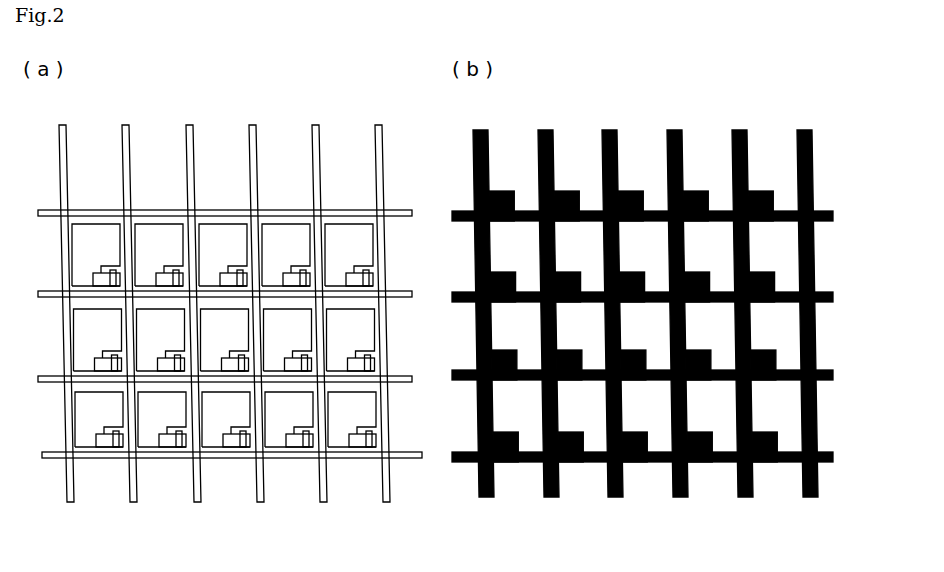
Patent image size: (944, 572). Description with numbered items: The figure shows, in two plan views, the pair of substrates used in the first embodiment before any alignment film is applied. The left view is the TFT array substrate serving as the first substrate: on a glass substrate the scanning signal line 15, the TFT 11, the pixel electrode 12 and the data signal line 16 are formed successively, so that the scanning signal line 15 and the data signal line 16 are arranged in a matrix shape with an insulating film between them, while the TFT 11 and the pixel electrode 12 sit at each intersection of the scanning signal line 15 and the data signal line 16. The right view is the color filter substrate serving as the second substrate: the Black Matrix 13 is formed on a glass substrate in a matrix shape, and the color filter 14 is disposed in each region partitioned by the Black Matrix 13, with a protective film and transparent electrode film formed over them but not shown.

The TFT 11 is at (174, 458).
The pixel electrode 12 is at (92, 247).
The Black Matrix 13 is at (552, 132).
The color filter 14 is at (651, 440).
The scanning signal line 15 is at (48, 459).
The data signal line 16 is at (390, 489).